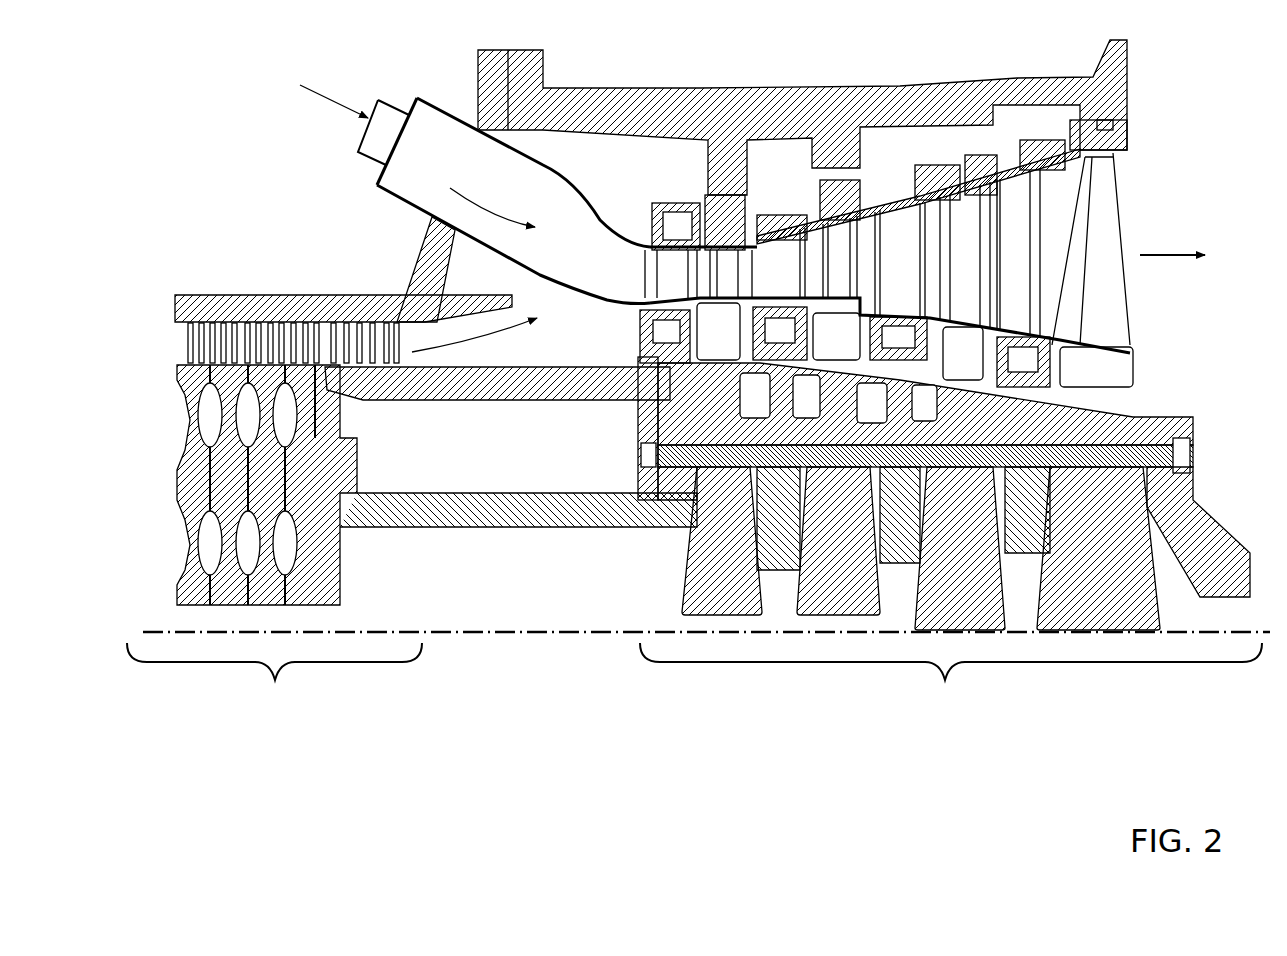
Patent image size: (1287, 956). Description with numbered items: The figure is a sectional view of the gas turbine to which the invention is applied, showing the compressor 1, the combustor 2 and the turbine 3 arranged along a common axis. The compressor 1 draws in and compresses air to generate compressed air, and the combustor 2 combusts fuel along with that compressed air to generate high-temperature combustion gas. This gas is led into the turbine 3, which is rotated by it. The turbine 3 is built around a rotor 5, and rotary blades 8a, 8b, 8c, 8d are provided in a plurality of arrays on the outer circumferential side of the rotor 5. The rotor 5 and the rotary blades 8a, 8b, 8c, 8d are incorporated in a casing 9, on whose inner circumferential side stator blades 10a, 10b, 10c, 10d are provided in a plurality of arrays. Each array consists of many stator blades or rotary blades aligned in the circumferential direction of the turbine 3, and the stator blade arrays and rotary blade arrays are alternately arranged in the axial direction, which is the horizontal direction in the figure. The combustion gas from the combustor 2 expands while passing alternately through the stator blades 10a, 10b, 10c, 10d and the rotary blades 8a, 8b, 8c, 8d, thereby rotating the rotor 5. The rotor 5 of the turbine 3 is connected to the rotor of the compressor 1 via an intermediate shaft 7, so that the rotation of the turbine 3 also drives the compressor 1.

The compressor 1 is at (398, 512).
The combustor 2 is at (441, 135).
The turbine 3 is at (950, 383).
The rotor 5 is at (1147, 417).
The intermediate shaft 7 is at (613, 528).
The rotary blade 8a is at (722, 268).
The rotary blade 8b is at (838, 268).
The rotary blade 8c is at (960, 233).
The rotary blade 8d is at (1108, 180).
The casing 9 is at (803, 108).
The stator blade 10a is at (667, 267).
The stator blade 10b is at (782, 267).
The stator blade 10c is at (902, 227).
The stator blade 10d is at (1032, 193).